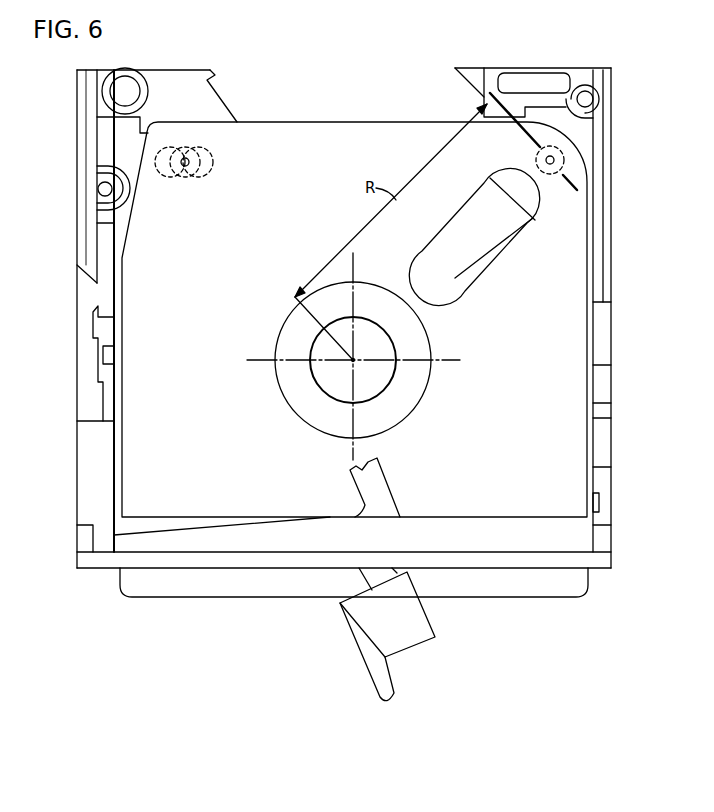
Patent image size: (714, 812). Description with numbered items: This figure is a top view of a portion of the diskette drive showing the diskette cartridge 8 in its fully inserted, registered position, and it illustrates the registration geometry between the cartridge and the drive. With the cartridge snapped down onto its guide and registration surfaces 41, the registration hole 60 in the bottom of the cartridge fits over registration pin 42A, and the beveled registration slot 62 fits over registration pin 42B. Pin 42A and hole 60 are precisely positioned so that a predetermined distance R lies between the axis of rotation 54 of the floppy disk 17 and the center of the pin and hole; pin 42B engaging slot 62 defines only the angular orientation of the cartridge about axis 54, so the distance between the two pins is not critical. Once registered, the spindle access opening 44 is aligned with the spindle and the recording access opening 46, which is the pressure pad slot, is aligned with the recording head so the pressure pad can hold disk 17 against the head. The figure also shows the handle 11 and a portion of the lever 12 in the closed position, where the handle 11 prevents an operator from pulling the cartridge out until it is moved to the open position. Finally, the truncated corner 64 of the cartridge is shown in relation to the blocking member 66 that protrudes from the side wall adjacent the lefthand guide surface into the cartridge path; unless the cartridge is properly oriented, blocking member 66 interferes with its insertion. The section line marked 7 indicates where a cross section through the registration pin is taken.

The diskette cartridge 8 is at (320, 130).
The guide and registration surfaces 41 is at (130, 139).
The blocking member 66 is at (120, 176).
The truncated corner 64 is at (127, 226).
The registration slot 62 is at (208, 165).
The registration pin 42B is at (186, 176).
The registration pin 42A is at (564, 160).
The registration hole 60 is at (556, 161).
The section line 7- 7 is at (519, 138).
The recording access opening 46 is at (499, 263).
The floppy disk 17 is at (455, 278).
The spindle access opening 44 is at (280, 340).
The axis of rotation 54 is at (350, 363).
The lever 12 is at (380, 498).
The handle 11 is at (378, 642).